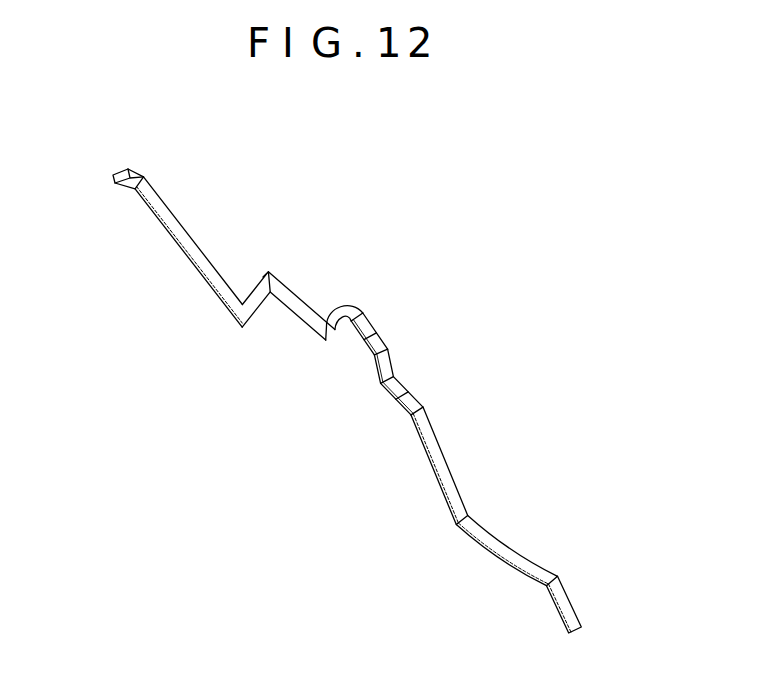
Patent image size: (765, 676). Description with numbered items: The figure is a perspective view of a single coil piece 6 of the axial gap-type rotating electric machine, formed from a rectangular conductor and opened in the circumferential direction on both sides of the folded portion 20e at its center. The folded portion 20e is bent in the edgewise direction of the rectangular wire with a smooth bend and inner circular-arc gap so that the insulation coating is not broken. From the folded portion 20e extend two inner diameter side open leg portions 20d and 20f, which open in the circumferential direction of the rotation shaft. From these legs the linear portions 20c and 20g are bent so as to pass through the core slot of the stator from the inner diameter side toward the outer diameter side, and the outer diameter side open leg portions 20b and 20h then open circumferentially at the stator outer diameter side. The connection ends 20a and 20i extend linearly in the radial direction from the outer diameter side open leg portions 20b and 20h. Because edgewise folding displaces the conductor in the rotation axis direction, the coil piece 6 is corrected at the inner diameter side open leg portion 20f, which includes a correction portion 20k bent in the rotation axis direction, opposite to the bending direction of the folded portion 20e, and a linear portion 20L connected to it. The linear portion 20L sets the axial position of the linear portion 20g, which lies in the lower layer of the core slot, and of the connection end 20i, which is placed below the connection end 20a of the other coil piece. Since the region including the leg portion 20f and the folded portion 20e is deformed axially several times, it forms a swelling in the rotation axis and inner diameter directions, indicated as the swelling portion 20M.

The coil piece 6 is at (183, 542).
The connection end 20a is at (121, 174).
The outer diameter side open leg portion 20b is at (173, 232).
The linear portion 20c is at (258, 289).
The inner diameter side open leg portion 20d is at (310, 301).
The folded portion 20e is at (353, 309).
The inner diameter side open leg portion 20f is at (388, 313).
The correction portion 20k is at (375, 358).
The linear portion 20L is at (407, 390).
The swelling portion 20M is at (353, 457).
The linear portion 20g is at (438, 457).
The outer diameter side open leg portion 20h is at (503, 552).
The connection end 20i is at (573, 608).